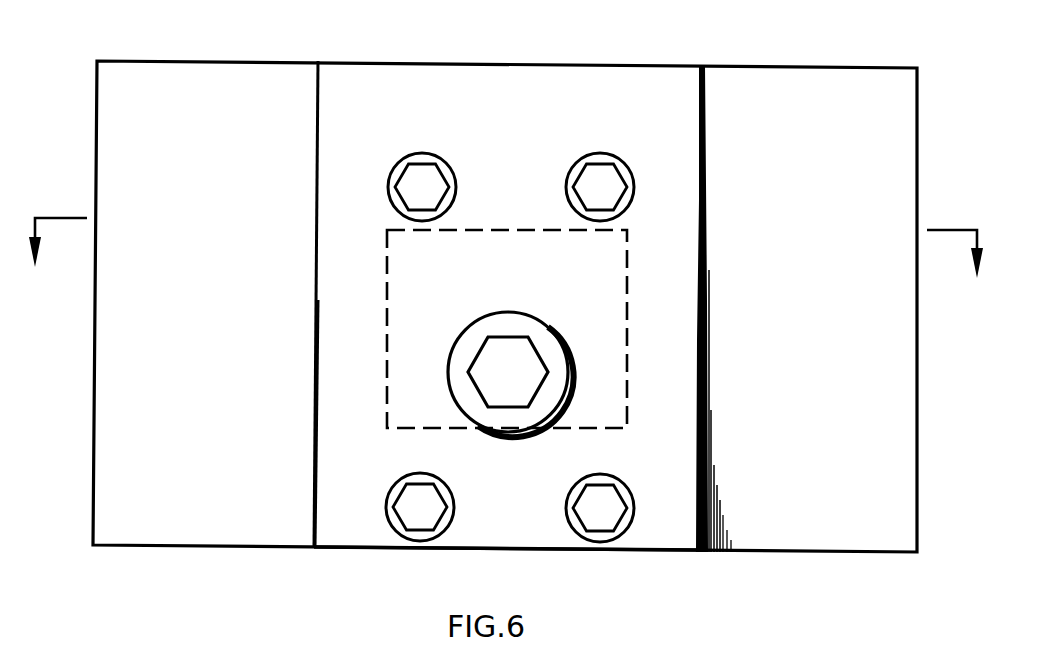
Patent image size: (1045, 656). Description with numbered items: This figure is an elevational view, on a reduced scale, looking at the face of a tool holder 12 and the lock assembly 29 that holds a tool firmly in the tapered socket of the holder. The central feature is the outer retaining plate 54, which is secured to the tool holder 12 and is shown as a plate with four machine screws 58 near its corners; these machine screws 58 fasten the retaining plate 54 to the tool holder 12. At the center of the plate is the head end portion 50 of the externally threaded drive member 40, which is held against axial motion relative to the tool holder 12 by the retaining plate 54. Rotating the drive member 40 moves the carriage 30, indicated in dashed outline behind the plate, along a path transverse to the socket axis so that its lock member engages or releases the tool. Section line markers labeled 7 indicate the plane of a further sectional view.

The clamp assembly 12 is at (207, 57).
The mounting plate 54 is at (511, 77).
The plate edge 29 is at (304, 425).
The recess outline 30 is at (386, 336).
The central fastener 50 is at (507, 313).
The hexagonal socket 40 is at (436, 384).
The mounting bolts 58 is at (439, 127).
The section line 7- 7 is at (505, 265).